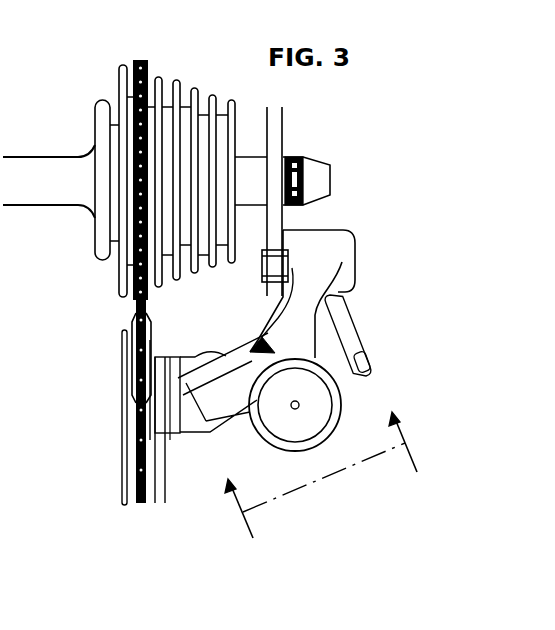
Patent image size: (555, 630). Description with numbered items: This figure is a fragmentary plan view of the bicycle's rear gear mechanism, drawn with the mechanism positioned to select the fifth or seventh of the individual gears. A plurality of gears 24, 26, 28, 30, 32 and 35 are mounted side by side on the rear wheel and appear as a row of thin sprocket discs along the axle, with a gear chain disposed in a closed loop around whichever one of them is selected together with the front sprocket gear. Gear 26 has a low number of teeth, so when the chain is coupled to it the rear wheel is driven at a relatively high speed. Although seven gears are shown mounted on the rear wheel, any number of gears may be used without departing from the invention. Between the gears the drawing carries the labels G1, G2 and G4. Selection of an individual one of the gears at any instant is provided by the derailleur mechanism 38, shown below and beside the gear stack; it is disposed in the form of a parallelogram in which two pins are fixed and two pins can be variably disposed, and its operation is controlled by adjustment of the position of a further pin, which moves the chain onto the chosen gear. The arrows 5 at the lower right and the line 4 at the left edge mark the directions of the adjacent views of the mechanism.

The rear wheel axle 4 is at (0, 417).
The gear 35 is at (123, 64).
The gear 32 is at (160, 76).
The gear 30 is at (177, 79).
The gear 28 is at (195, 87).
The gear 26 is at (213, 94).
The gear 24 is at (236, 99).
The derailleur mechanism 38 is at (368, 233).
The gap between sprockets G4 is at (177, 289).
The gap between sprockets G2 is at (213, 270).
The gap between sprockets G1 is at (232, 266).
The section line 5- 5 is at (325, 490).